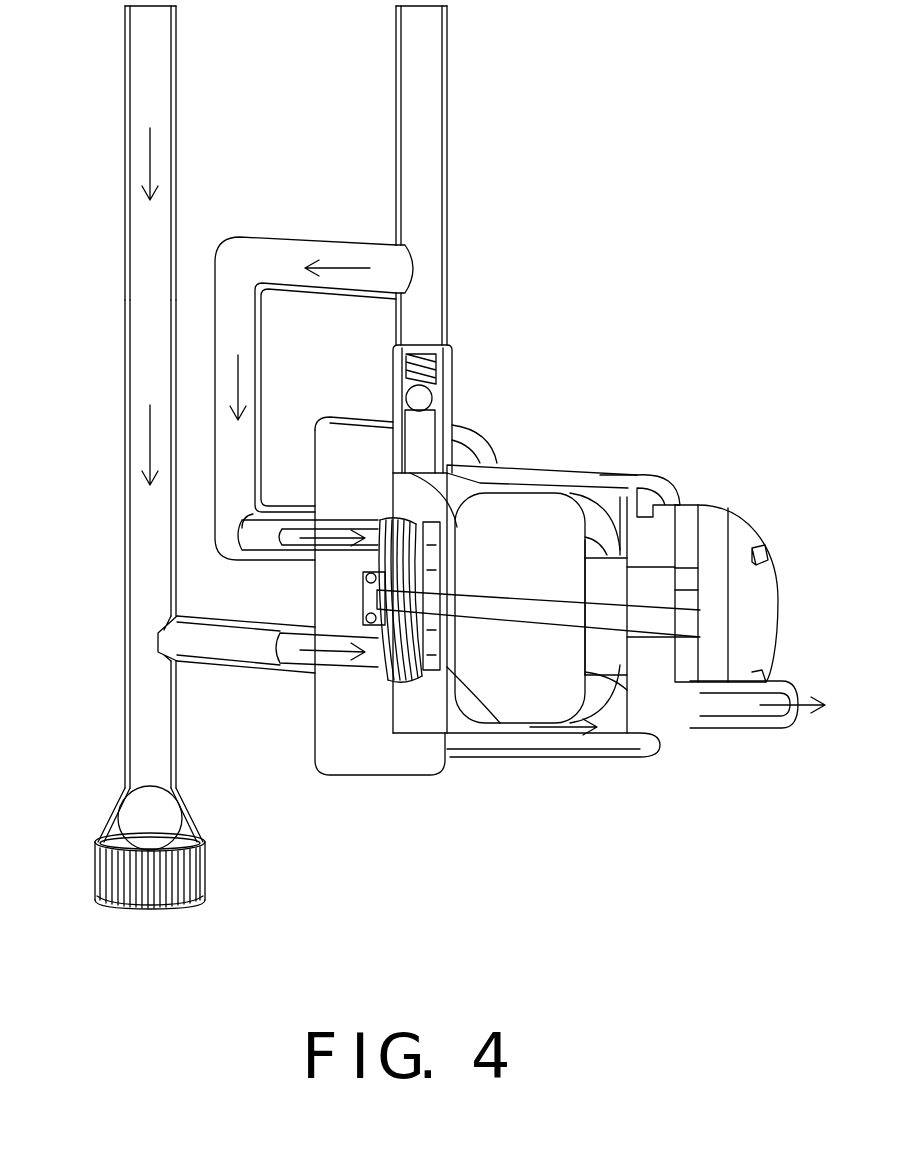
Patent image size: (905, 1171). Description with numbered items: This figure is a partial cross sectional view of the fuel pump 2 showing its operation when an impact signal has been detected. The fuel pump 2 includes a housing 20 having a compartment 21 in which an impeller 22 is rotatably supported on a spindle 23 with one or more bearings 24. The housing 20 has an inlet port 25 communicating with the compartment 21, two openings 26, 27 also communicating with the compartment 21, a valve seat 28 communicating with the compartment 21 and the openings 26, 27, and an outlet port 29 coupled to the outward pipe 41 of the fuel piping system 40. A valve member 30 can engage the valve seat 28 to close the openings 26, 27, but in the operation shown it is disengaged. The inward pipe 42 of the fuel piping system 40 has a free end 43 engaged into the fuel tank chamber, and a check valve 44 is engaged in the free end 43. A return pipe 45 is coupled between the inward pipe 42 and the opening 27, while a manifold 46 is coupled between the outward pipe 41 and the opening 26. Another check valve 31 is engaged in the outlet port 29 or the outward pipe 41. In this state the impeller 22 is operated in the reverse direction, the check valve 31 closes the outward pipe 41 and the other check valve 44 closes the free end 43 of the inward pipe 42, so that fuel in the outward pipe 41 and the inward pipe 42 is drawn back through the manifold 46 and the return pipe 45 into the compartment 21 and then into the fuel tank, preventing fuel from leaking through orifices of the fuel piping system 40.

The fuel pump 2 is at (765, 512).
The housing 20 is at (628, 475).
The compartment 21 is at (605, 500).
The impeller 22 is at (515, 705).
The spindle 23 is at (638, 617).
The bearings 24 is at (367, 577).
The inlet port 25 is at (775, 730).
The opening 26 is at (287, 531).
The opening 27 is at (177, 660).
The valve seat 28 is at (383, 650).
The outlet port 29 is at (442, 420).
The valve member 30 is at (428, 668).
The check valve 31 is at (435, 372).
The fuel piping system 40 is at (105, 92).
The outward pipe 41 is at (447, 148).
The inward pipe 42 is at (125, 350).
The free end 43 is at (188, 895).
The check valve 44 is at (138, 822).
The return pipe 45 is at (230, 680).
The manifold 46 is at (302, 240).